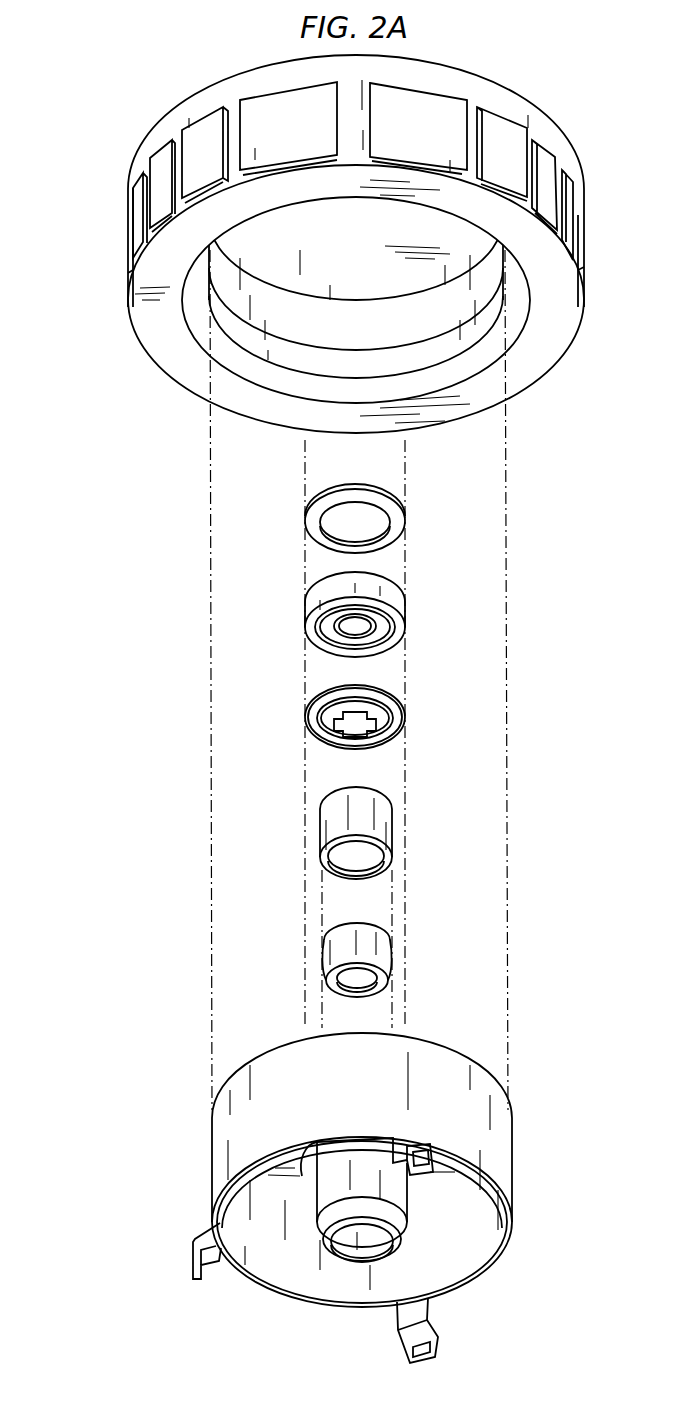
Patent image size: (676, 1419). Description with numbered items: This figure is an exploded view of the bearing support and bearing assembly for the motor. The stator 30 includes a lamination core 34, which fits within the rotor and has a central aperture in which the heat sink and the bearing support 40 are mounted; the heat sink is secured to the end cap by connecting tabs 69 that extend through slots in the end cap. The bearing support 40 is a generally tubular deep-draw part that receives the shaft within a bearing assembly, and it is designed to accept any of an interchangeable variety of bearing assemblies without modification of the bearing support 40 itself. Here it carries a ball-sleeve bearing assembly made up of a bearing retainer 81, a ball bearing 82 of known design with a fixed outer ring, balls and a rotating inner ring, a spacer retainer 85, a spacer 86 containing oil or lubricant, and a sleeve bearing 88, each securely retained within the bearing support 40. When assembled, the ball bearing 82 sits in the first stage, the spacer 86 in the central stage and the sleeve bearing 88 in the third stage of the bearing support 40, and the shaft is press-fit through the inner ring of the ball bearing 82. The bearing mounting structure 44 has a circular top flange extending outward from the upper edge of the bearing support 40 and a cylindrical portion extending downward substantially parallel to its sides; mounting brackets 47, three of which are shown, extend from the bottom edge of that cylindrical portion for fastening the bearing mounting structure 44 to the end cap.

The stator 30 is at (325, 244).
The lamination core 34 is at (358, 304).
The bearing retainer 81 is at (404, 513).
The ball bearing 82 is at (404, 607).
The spacer retainer 85 is at (404, 712).
The spacer 86 is at (392, 809).
The sleeve bearing 88 is at (393, 962).
The bearing mounting structure 44 is at (399, 1198).
The bearing support 40 is at (410, 1210).
The mounting bracket 47 is at (430, 1313).
The connecting tab 69 is at (440, 1343).